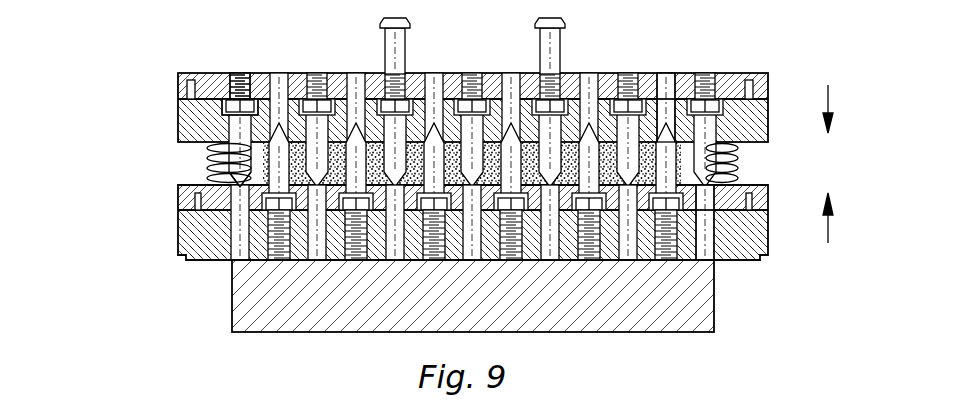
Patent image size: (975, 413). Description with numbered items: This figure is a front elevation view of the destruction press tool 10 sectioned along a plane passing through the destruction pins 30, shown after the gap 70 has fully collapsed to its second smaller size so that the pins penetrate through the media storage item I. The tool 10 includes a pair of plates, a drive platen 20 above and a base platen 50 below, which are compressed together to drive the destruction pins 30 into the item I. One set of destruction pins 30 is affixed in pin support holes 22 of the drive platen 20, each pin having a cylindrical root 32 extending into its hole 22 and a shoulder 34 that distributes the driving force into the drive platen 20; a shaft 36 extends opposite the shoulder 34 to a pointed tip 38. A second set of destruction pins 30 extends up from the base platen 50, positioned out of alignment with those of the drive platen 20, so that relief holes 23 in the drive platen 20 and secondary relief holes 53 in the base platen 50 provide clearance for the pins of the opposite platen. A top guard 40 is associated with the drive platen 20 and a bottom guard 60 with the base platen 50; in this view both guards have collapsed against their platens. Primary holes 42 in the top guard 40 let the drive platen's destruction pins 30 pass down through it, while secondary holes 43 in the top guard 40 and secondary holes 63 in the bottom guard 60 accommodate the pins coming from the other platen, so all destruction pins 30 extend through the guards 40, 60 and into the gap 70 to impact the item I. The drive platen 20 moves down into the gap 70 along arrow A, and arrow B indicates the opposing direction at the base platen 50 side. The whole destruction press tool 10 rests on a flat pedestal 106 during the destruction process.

The destruction press tool 10 is at (468, 161).
The drive platen 20 is at (453, 83).
The pin support holes 22 is at (242, 84).
The relief holes 23 is at (667, 80).
The destruction pins 30 is at (737, 157).
The root 32 is at (245, 82).
The shoulder 34 is at (208, 84).
The shaft 36 is at (197, 166).
The tip 38 is at (232, 174).
The top guard 40 is at (202, 123).
The primary holes 42 is at (230, 108).
The secondary holes 43 is at (663, 112).
The base platen 50 is at (203, 252).
The secondary relief holes 53 is at (703, 245).
The bottom guard 60 is at (208, 207).
The secondary holes 63 is at (703, 200).
The gap 70 is at (152, 153).
The flat pedestal 106 is at (648, 325).
The media storage item I is at (417, 157).
The arrow A is at (828, 95).
The direction B is at (828, 230).